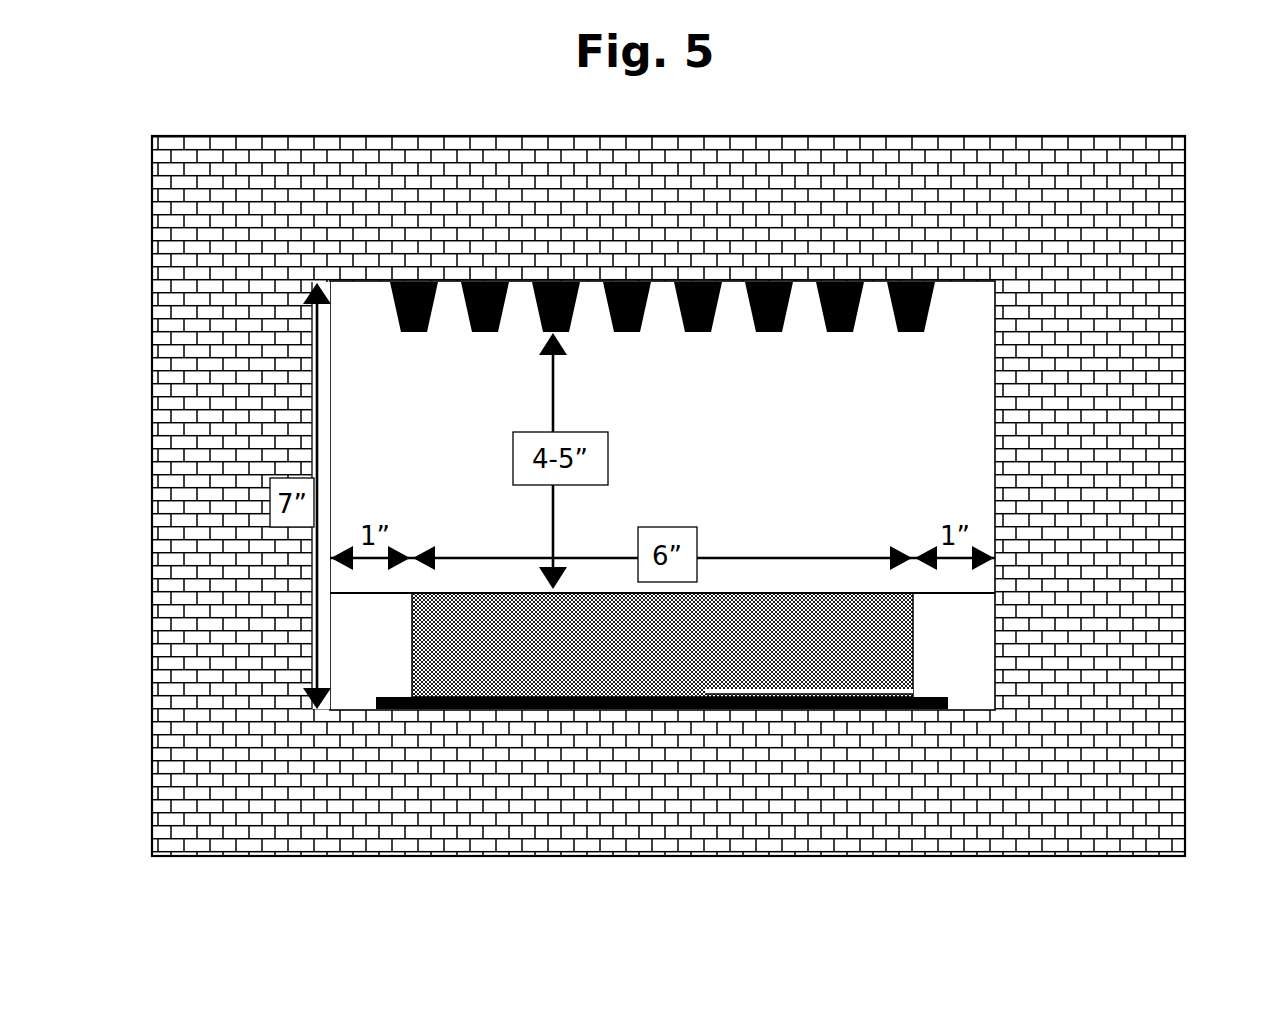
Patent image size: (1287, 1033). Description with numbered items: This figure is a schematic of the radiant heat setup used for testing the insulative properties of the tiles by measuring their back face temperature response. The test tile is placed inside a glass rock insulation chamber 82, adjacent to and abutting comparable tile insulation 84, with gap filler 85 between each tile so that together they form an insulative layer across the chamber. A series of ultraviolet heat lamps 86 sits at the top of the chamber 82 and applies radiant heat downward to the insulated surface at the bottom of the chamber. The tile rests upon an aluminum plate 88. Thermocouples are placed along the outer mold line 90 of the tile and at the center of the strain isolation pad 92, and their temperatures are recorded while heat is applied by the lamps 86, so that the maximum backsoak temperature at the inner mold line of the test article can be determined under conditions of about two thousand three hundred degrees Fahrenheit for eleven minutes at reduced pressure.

The glass rock insulation chamber 82 is at (1062, 272).
The comparable tile insulation 84 is at (360, 687).
The gap filler 85 is at (407, 660).
The ultraviolet heat lamps 86 is at (462, 267).
The aluminum plate 88 is at (832, 731).
The outer mold line 90 is at (695, 578).
The strain isolation pad 92 is at (705, 685).